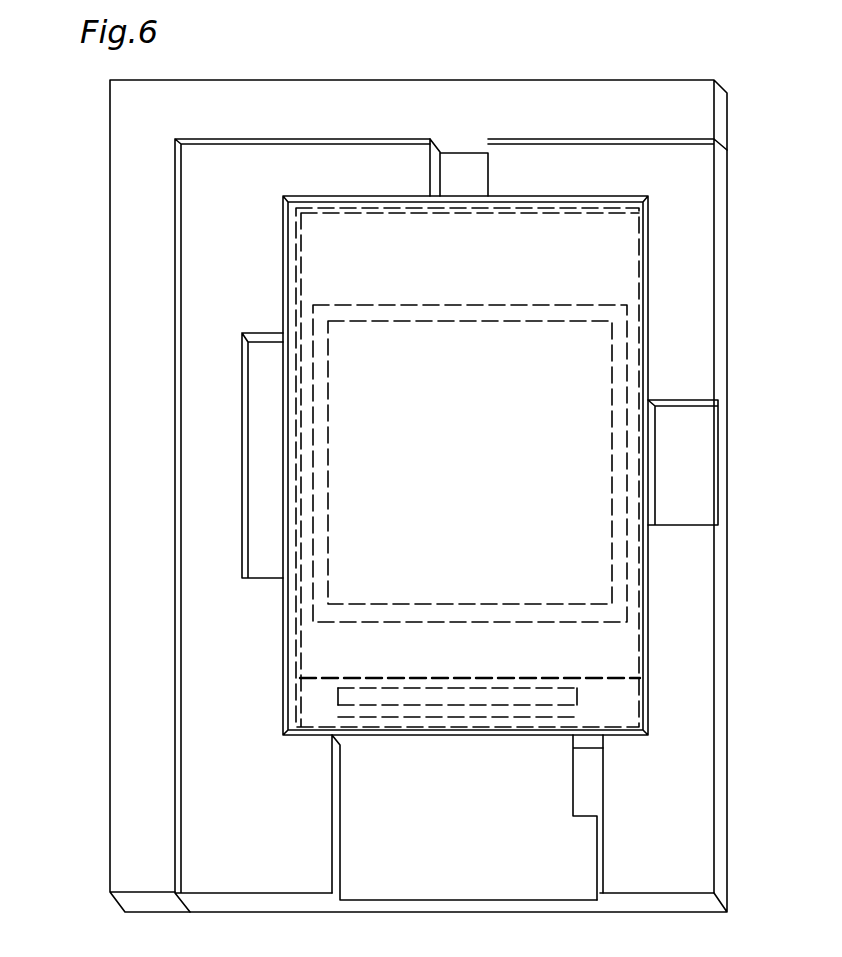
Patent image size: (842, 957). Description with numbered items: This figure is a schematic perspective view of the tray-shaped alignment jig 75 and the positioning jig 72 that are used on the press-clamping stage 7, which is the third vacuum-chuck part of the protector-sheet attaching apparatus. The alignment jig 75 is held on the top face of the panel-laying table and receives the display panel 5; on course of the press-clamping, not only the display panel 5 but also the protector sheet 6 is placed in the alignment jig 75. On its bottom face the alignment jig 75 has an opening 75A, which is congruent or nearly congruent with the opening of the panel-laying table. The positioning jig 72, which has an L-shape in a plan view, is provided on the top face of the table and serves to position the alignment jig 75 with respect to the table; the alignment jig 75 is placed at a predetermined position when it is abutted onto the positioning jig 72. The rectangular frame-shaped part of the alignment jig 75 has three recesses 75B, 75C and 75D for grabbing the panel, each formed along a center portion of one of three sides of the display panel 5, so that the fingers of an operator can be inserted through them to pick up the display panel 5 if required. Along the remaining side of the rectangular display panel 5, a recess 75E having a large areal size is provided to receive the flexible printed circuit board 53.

The positioning jig 72 is at (135, 148).
The tray-shaped alignment jig 75 is at (200, 208).
The opening 75A is at (362, 625).
The recess for grabbing the panel 75B is at (458, 170).
The recess for grabbing the panel 75C is at (268, 483).
The recess for grabbing the panel 75D is at (672, 462).
The recess 75E is at (587, 797).
The protector sheet 6 is at (328, 276).
The display panel 5 is at (297, 408).
The press-clamping stage 7 is at (378, 577).
The flexible printed circuit board 53 is at (405, 802).